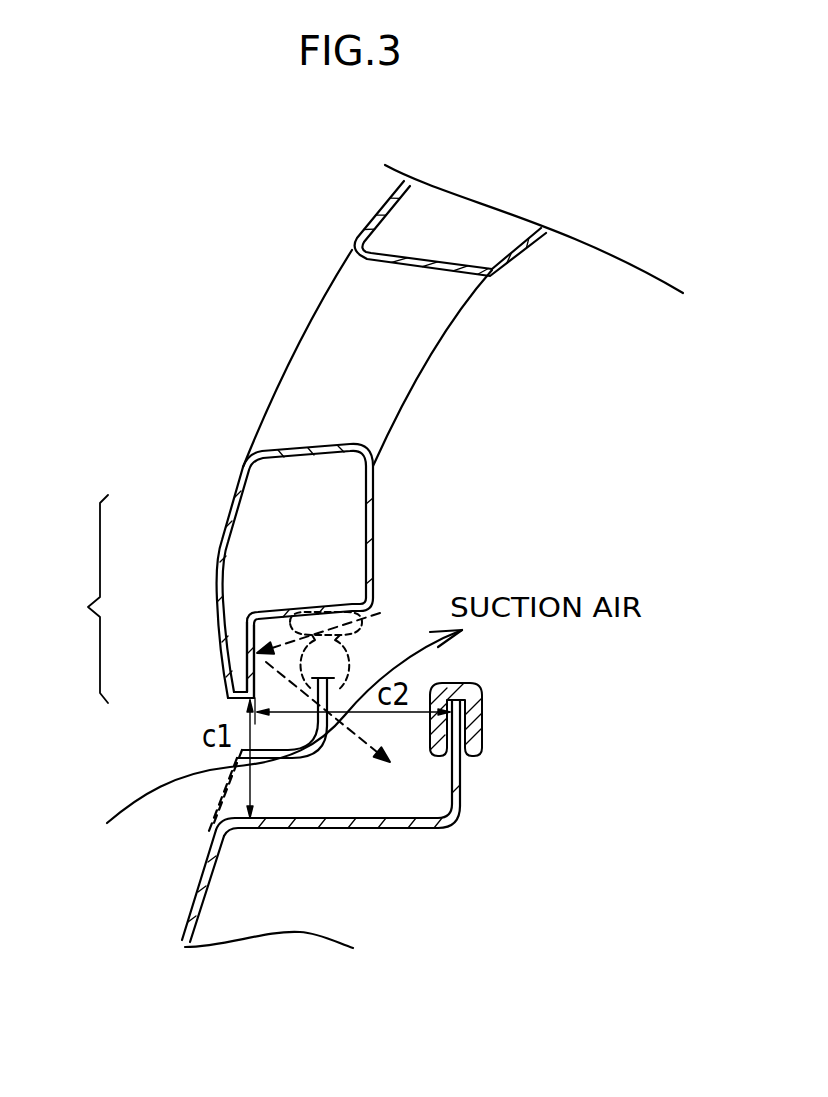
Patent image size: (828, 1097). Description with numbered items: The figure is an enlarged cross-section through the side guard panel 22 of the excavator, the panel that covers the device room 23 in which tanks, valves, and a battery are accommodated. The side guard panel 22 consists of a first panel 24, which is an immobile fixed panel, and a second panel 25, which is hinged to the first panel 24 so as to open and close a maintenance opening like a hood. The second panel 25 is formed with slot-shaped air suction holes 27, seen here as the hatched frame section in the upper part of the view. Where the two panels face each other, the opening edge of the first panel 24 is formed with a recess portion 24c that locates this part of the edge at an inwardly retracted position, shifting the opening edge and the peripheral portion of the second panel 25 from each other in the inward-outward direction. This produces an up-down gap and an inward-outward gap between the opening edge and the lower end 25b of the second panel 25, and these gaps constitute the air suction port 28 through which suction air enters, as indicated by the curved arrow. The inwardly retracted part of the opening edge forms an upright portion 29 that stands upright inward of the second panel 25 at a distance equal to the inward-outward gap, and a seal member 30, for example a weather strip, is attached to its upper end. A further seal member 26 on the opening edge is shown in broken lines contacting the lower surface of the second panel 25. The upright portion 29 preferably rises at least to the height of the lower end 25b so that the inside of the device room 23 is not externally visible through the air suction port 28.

The side guard panel 22 is at (79, 599).
The device room 23 is at (513, 535).
The first panel 24 is at (208, 834).
The recess portion 24c is at (353, 828).
The second panel 25 is at (227, 533).
The lower end 25b is at (237, 703).
The seal member 26 is at (312, 603).
The air suction holes 27 is at (327, 320).
The air suction port 28 is at (300, 780).
The upright portion 29 is at (462, 770).
The seal member 30 is at (482, 702).